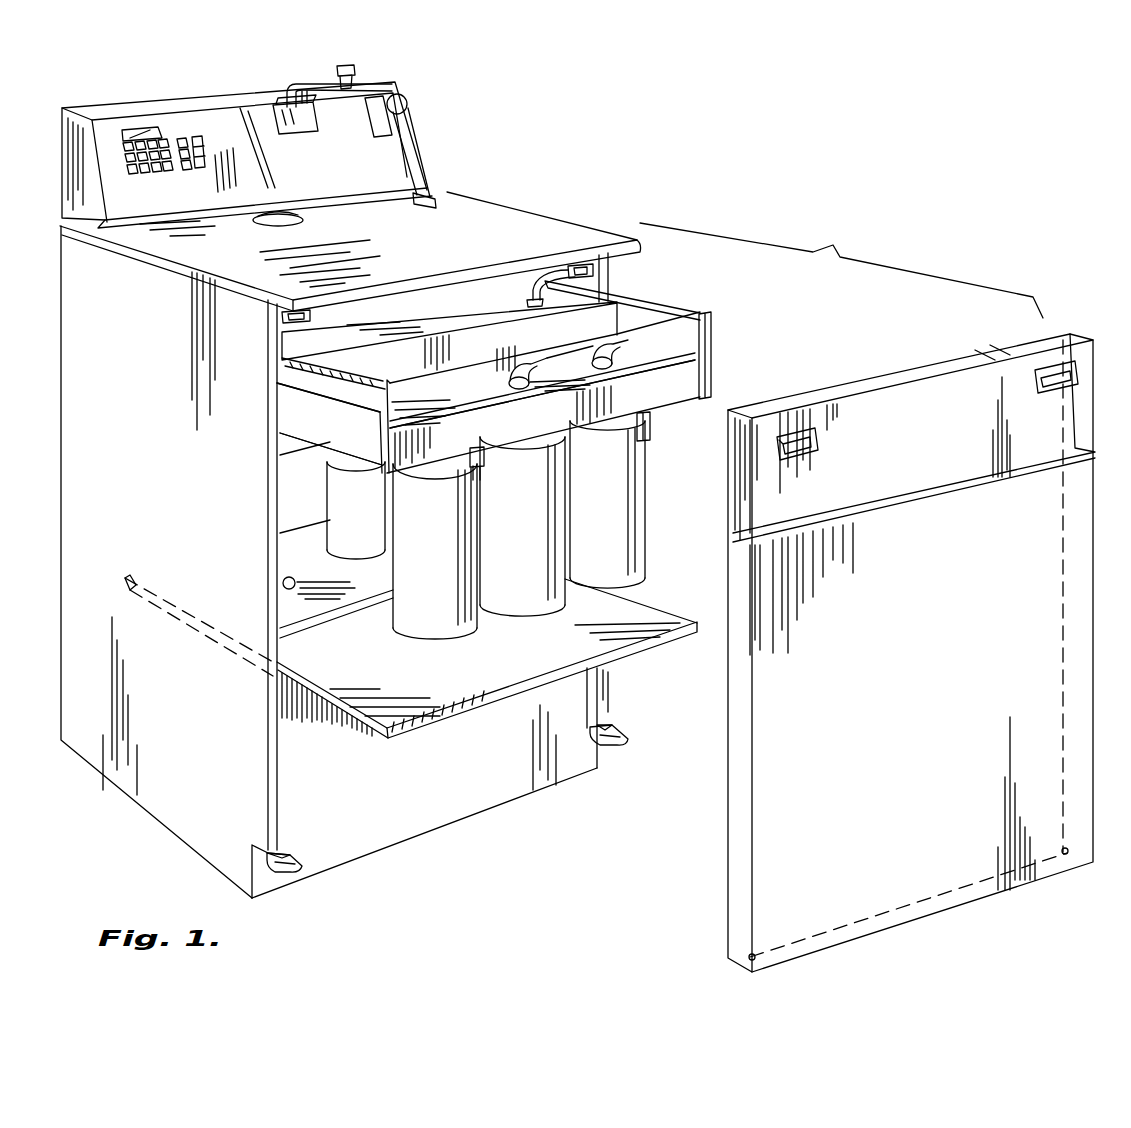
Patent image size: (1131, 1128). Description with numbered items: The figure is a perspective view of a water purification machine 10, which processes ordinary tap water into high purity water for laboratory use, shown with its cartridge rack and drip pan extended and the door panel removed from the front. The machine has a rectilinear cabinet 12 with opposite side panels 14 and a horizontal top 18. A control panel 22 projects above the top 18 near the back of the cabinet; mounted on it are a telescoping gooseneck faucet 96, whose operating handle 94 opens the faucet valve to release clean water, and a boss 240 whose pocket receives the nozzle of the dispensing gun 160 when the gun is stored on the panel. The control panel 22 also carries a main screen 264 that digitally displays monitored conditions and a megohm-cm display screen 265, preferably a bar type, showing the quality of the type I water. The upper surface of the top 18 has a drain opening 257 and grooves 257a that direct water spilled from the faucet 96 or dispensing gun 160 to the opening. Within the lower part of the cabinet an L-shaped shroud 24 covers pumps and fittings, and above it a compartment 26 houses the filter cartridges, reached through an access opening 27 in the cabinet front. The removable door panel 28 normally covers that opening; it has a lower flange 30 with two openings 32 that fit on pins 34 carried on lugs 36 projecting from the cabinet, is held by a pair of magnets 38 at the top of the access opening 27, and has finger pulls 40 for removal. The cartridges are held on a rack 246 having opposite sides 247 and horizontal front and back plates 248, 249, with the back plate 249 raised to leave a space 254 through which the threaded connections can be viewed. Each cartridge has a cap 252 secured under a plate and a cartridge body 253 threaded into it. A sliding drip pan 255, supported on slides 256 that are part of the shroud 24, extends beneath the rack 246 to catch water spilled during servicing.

The water purification machine 10 is at (536, 156).
The cabinet 12 is at (443, 828).
The side panels 14 is at (212, 845).
The top 18 is at (558, 232).
The control panel 22 is at (258, 115).
The L-shaped shroud 24 is at (570, 768).
The compartment 26 is at (325, 504).
The access opening 27 is at (288, 585).
The door panel 28 is at (757, 805).
The flange 30 is at (928, 901).
The openings 32 is at (760, 957).
The pins 34 is at (272, 855).
The lugs 36 is at (294, 863).
The magnets 38 is at (282, 318).
The finger pulls 40 is at (818, 446).
The operating handle 94 is at (316, 110).
The telescoping gooseneck faucet 96 is at (356, 72).
The dispensing gun 160 is at (410, 108).
The boss 240 is at (389, 125).
The rack 246 is at (707, 312).
The sides 247 is at (706, 337).
The front plate 248 is at (680, 365).
The back plate 249 is at (605, 300).
The cap 252 is at (480, 460).
The cartridge body 253 is at (331, 540).
The space 254 is at (415, 388).
The sliding drip pan 255 is at (488, 690).
The slides 256 is at (215, 635).
The drain opening 257 is at (295, 225).
The grooves 257a is at (388, 216).
The main screen 264 is at (148, 127).
The megohm-cm display screen 265 is at (197, 158).